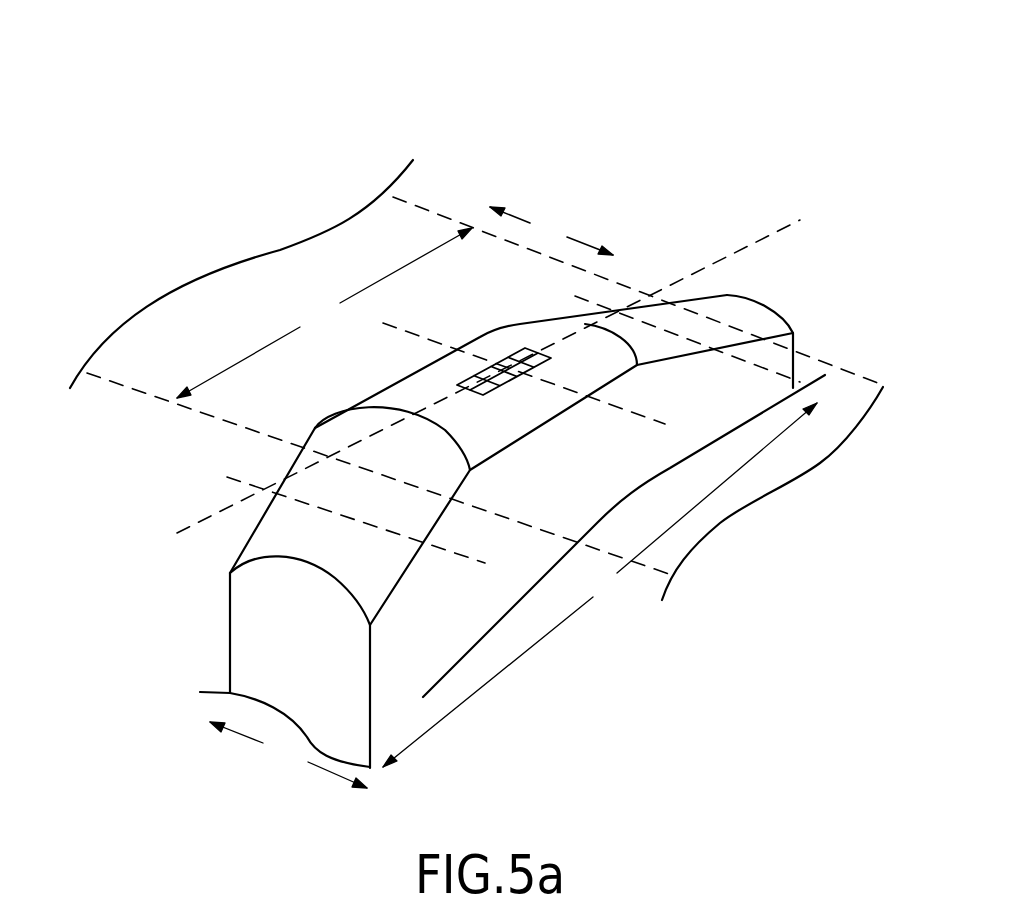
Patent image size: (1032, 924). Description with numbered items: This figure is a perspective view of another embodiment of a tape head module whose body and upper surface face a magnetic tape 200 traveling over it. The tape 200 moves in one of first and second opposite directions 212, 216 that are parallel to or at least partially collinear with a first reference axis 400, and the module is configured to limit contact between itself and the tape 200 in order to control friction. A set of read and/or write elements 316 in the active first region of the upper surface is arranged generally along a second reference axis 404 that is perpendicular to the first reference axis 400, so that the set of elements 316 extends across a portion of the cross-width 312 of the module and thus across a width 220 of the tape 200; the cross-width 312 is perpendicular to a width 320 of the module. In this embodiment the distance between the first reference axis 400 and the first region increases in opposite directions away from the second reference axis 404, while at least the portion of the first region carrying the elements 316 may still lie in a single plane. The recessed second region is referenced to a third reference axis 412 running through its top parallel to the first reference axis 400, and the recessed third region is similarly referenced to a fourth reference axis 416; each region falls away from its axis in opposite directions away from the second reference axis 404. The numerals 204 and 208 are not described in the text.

The tape 200 is at (332, 225).
The upstream reference line 204 is at (193, 408).
The downstream reference line 208 is at (410, 202).
The first direction 212 is at (530, 223).
The second direction 216 is at (583, 237).
The width of the tape 220 is at (324, 313).
The cross-width of the tape head module 312 is at (600, 585).
The elements 316 is at (514, 355).
The width of the tape head module 320 is at (288, 755).
The first reference axis 400 is at (400, 330).
The second reference axis 404 is at (728, 255).
The third reference axis 412 is at (452, 550).
The fourth reference axis 416 is at (750, 362).